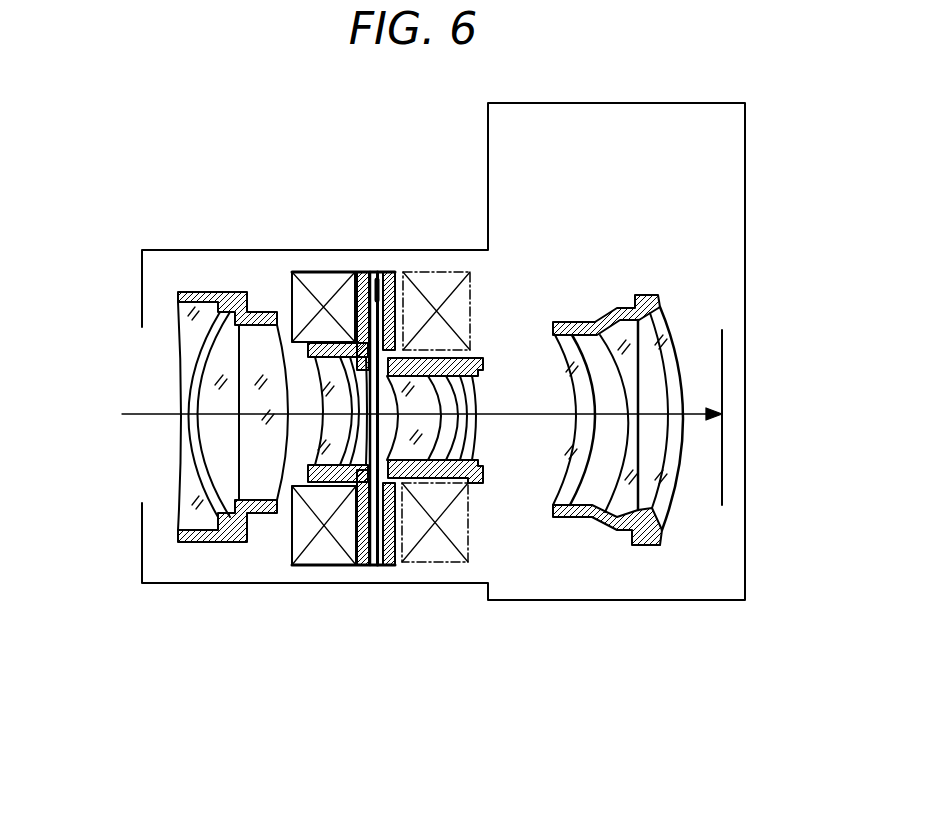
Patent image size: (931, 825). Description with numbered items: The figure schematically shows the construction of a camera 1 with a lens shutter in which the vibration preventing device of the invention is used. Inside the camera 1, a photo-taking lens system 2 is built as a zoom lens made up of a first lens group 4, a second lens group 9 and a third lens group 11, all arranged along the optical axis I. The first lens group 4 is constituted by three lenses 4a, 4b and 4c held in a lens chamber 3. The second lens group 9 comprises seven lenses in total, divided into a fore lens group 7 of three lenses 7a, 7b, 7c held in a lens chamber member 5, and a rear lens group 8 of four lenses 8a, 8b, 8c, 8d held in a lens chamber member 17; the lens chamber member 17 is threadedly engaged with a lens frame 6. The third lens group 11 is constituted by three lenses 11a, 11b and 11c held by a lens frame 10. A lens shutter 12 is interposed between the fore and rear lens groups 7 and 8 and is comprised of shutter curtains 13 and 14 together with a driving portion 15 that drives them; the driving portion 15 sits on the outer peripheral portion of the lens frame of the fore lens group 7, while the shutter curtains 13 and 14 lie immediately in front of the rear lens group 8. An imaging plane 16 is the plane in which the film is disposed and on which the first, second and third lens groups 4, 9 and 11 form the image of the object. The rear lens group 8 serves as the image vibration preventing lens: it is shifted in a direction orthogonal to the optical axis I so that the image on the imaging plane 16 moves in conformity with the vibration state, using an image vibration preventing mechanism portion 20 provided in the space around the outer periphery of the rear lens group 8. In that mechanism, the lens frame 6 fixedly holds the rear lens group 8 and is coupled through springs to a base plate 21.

The camera 1 is at (672, 100).
The photo-taking lens system 2 is at (212, 276).
The lens chamber 3 is at (178, 536).
The first lens group 4 is at (209, 500).
The lens 4a is at (192, 543).
The lens 4b is at (221, 530).
The lens 4c is at (260, 530).
The lens chamber member 5 is at (327, 565).
The lens frame 6 is at (403, 563).
The fore lens group 7 is at (301, 296).
The lens 7a is at (322, 357).
The lens 7b is at (343, 357).
The lens 7c is at (360, 357).
The rear lens group 8 is at (484, 560).
The lens 8a is at (411, 480).
The lens 8b is at (440, 480).
The lens 8c is at (473, 478).
The lens 8d is at (484, 468).
The second lens group 9 is at (313, 378).
The lens frame 10 is at (606, 292).
The third lens group 11 is at (648, 504).
The lens 11a is at (547, 496).
The lens 11b is at (593, 517).
The lens 11c is at (692, 479).
The lens shutter 12 is at (342, 565).
The shutter curtain 13 is at (376, 292).
The shutter curtain 14 is at (375, 565).
The driving portion 15 is at (302, 565).
The imaging plane 16 is at (723, 362).
The lens chamber member 17 is at (482, 362).
The image vibration preventing mechanism portion 20 is at (447, 272).
The base plate 21 is at (392, 272).
The optical axis I is at (123, 410).